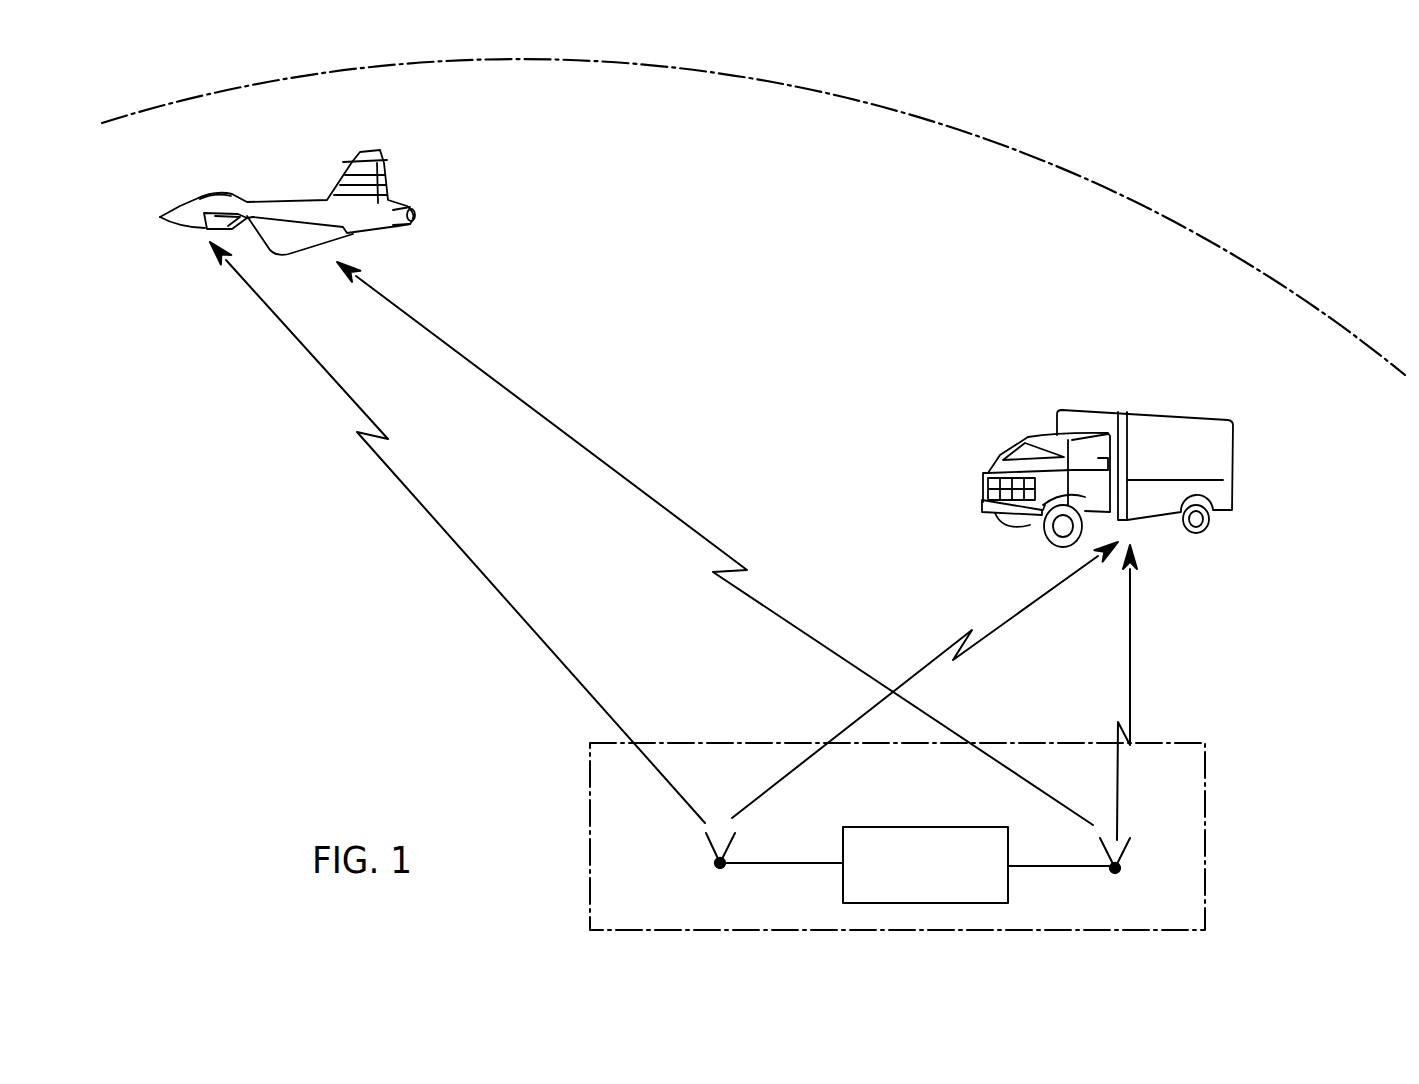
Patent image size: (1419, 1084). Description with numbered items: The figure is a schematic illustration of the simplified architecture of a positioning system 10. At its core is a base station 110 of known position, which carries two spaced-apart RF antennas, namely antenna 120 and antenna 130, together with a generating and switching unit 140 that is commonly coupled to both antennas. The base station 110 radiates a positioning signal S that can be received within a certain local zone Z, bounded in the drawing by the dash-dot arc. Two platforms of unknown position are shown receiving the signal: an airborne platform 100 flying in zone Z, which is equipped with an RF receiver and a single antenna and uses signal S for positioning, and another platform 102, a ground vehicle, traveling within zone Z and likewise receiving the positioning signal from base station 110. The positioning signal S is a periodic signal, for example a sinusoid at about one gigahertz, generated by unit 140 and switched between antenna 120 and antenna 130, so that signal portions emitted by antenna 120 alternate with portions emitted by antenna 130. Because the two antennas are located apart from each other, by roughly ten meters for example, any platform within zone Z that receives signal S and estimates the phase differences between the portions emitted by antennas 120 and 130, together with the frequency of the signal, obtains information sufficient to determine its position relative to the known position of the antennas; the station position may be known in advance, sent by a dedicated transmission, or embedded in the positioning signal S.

The positioning system 10 is at (970, 836).
The platform 100 is at (160, 219).
The platform 102 is at (1192, 453).
The base station 110 is at (1205, 868).
The antenna 120 is at (1125, 875).
The antenna 130 is at (713, 865).
The generating and switching unit 140 is at (998, 878).
The positioning signal S is at (635, 487).
The local zone Z is at (753, 217).